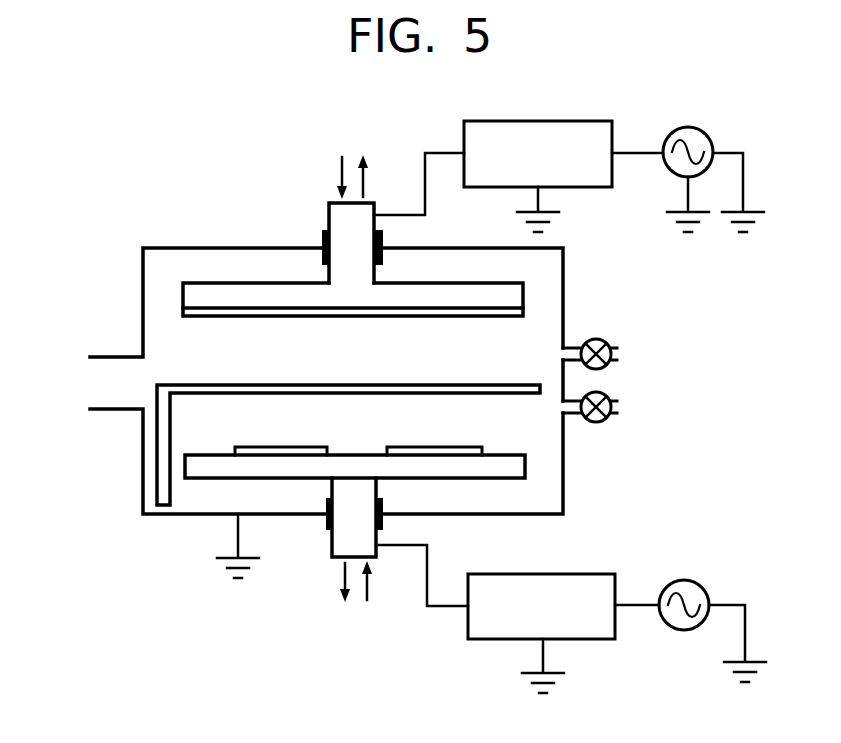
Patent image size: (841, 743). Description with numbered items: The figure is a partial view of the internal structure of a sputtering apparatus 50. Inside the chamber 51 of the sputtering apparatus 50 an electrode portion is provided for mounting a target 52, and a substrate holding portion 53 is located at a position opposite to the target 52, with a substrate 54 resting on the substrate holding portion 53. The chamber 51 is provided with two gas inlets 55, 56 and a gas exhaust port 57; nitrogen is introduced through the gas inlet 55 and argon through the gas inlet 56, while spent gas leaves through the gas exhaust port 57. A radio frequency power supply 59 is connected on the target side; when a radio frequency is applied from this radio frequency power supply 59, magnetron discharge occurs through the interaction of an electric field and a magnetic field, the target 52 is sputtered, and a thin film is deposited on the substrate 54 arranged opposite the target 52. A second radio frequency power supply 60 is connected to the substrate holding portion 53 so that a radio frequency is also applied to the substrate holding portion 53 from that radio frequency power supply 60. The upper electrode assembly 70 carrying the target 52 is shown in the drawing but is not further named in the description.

The sputtering apparatus 50 is at (171, 234).
The chamber 51 is at (143, 307).
The target 52 is at (515, 313).
The substrate holding portion 53 is at (498, 462).
The substrate 54 is at (299, 447).
The gas inlet 55 is at (628, 353).
The gas inlet 56 is at (628, 407).
The gas exhaust port 57 is at (102, 389).
The radio frequency power supply 59 is at (690, 127).
The radio frequency power supply 60 is at (690, 581).
The upper electrode 70 is at (513, 292).